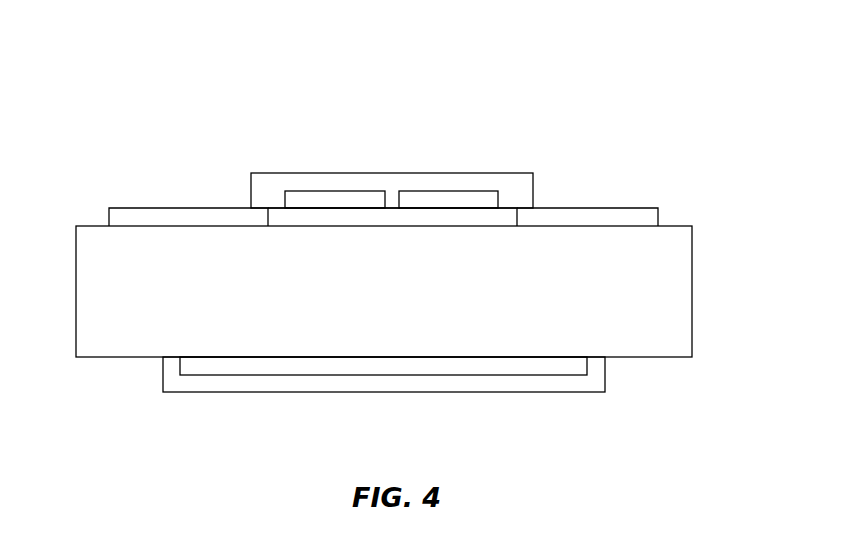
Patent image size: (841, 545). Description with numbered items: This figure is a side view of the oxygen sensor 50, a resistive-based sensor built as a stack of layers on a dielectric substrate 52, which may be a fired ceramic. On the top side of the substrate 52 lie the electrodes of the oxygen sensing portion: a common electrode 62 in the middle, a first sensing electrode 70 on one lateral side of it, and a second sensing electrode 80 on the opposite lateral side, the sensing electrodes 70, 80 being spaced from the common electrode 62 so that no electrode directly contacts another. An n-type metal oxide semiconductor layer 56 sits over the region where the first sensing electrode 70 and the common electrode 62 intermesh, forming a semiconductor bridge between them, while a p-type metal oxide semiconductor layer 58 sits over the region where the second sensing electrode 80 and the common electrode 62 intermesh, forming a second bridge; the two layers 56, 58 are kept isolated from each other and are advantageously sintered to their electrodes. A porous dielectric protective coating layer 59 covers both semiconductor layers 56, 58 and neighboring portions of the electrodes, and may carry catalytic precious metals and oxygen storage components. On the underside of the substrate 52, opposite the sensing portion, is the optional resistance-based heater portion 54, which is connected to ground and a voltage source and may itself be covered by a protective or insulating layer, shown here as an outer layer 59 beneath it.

The oxygen sensor 50 is at (626, 77).
The dielectric substrate 52 is at (693, 267).
The heater portion 54 is at (533, 366).
The n-type metal oxide semiconductor layer 56 is at (332, 200).
The p-type metal oxide semiconductor layer 58 is at (448, 200).
The porous dielectric protective coating layer 59 is at (268, 186).
The common electrode 62 is at (375, 216).
The first sensing electrode 70 is at (173, 217).
The second sensing electrode 80 is at (585, 218).